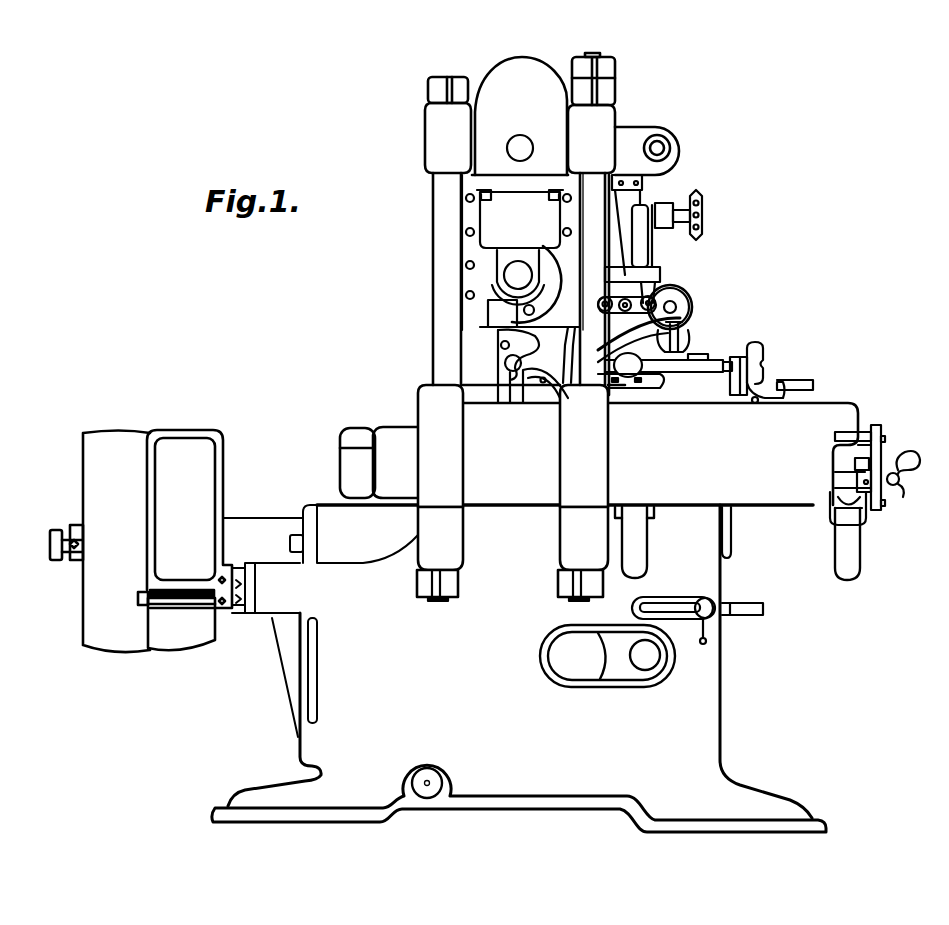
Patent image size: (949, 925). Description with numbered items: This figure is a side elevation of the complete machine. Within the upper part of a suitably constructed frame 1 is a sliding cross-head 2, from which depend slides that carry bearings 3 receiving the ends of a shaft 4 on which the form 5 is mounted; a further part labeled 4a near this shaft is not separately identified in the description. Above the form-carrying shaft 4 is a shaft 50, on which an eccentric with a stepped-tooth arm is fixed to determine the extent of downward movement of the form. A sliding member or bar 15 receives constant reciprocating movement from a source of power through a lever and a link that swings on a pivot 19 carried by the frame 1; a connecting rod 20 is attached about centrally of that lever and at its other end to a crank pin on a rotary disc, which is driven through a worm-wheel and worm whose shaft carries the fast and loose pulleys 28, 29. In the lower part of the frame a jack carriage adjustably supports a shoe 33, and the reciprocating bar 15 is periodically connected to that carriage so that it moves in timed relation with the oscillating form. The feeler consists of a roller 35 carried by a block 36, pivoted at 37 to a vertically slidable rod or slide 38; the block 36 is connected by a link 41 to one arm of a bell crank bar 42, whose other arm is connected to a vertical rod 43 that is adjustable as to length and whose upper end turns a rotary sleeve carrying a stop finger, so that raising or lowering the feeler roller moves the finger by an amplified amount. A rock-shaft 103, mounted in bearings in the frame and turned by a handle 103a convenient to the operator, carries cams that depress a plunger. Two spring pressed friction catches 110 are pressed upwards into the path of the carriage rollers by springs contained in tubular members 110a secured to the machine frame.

The frame 1 is at (283, 792).
The sliding cross-head 2 is at (497, 253).
The bearings 3 is at (512, 278).
The shaft 4 is at (498, 300).
The bearing bracket 4a is at (498, 322).
The form 5 is at (490, 328).
The sliding member or bar 15 is at (732, 535).
The pivot 19 is at (430, 781).
The connecting rod 20 is at (620, 656).
The fast pulley 28 is at (187, 487).
The loose pulley 29 is at (110, 468).
The shoe 33 is at (683, 338).
The feeler roller 35 is at (688, 308).
The block 36 is at (692, 300).
The pivot 37 is at (675, 296).
The vertically slidable rod or slide 38 is at (650, 272).
The link 41 is at (657, 272).
The bell crank bar 42 is at (584, 348).
The vertical rod 43 is at (592, 251).
The shaft 50 is at (522, 148).
The rock-shaft 103 is at (904, 492).
The handle 103a is at (906, 450).
The spring pressed friction catches 110 is at (833, 500).
The tubular members 110a is at (648, 551).